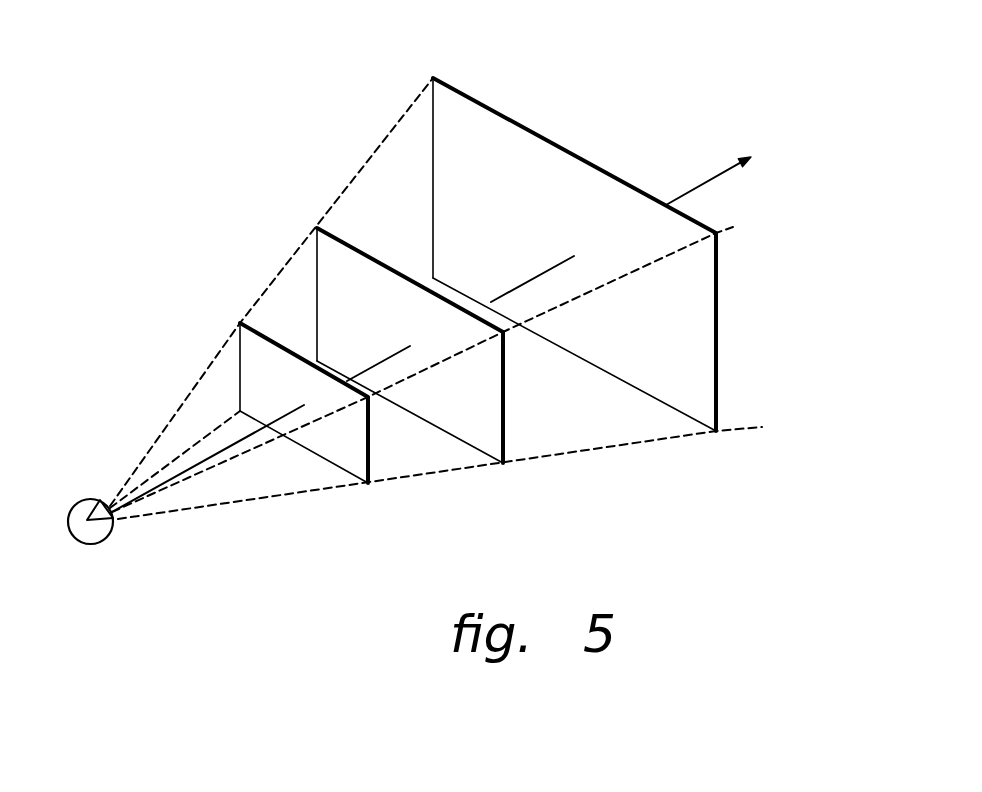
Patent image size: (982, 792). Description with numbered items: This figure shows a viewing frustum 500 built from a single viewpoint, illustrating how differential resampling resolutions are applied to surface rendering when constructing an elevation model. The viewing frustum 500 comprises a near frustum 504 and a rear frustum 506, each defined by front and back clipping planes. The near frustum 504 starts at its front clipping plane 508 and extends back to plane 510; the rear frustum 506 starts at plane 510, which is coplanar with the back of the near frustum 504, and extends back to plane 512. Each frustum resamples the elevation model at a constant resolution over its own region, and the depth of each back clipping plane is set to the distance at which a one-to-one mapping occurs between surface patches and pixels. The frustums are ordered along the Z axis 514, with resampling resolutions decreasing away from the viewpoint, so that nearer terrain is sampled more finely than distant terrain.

The viewing frustum 500 is at (787, 109).
The near frustum 504 is at (295, 303).
The rear frustum 506 is at (397, 185).
The front clipping plane of near frustum 508 is at (350, 462).
The back clipping plane of near frustum 510 is at (490, 438).
The back clipping plane of rear frustum 512 is at (697, 402).
The Z axis 514 is at (704, 182).